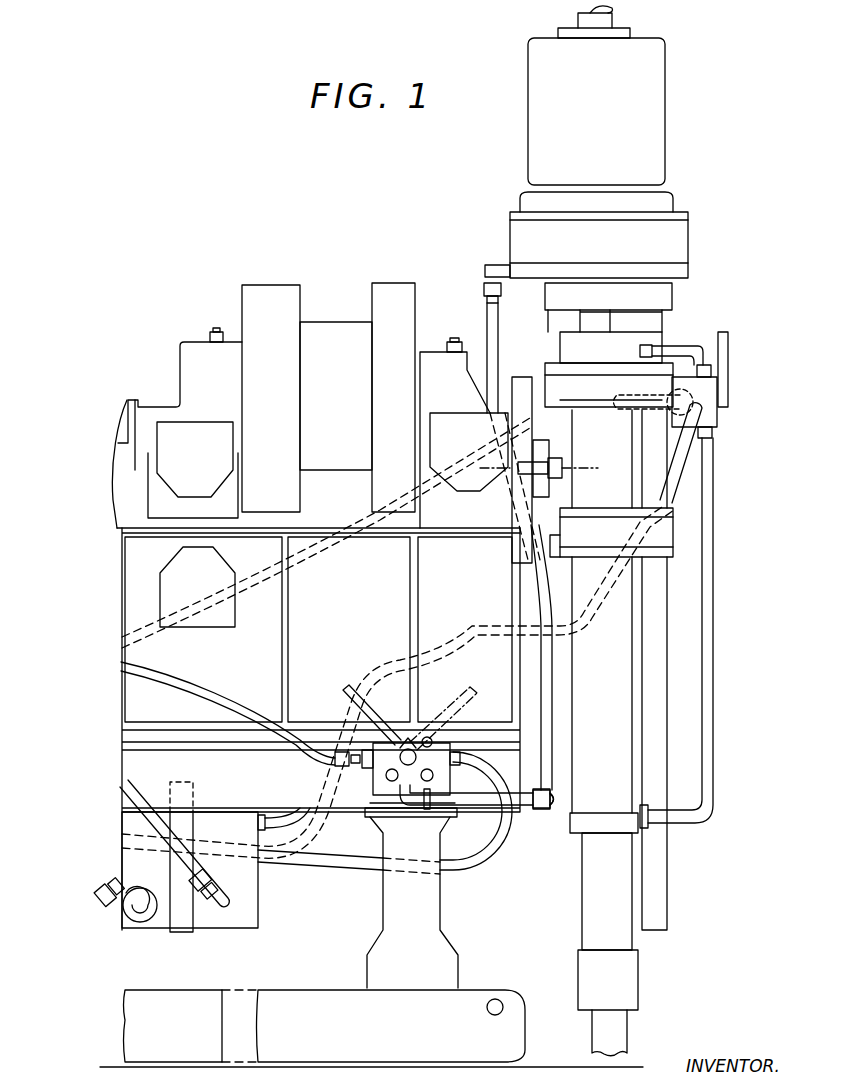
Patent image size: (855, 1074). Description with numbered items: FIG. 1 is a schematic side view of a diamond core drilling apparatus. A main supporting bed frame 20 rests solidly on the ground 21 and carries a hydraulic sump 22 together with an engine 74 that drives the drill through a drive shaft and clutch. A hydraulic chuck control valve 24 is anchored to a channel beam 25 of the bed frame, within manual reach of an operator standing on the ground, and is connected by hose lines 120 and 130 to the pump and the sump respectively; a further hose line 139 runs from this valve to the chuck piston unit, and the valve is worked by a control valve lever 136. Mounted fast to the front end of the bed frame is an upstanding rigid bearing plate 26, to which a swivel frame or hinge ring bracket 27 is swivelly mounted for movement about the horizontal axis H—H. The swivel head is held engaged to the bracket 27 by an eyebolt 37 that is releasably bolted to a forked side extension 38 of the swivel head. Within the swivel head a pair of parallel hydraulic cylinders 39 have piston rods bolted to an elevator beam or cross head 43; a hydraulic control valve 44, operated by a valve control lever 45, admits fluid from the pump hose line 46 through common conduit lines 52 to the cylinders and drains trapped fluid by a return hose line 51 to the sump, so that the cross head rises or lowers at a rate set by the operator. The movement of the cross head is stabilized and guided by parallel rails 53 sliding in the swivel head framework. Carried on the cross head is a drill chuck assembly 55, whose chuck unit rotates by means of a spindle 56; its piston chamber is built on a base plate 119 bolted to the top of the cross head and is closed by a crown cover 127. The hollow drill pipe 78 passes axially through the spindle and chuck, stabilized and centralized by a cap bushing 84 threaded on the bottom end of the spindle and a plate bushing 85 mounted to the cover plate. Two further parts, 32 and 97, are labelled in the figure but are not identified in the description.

The main supporting bed frame 20 is at (356, 602).
The ground 21 is at (96, 1042).
The hydraulic sump 22 is at (266, 888).
The hydraulic chuck control valve 24 is at (372, 790).
The channel beam 25 is at (314, 813).
The bearing plate 26 is at (510, 376).
The swivel frame or hinge ring bracket 27 is at (524, 566).
The collar flange 32 is at (674, 535).
The eyebolt 37 is at (552, 488).
The forked side extension 38 is at (547, 442).
The hydraulic cylinders 39 is at (576, 800).
The elevator beam or cross head 43 is at (677, 294).
The hydraulic control valve 44 is at (717, 420).
The valve control lever 45 is at (726, 334).
The pump hose line 46 is at (262, 585).
The return hose line 51 is at (686, 460).
The common conduit lines 52 is at (687, 347).
The parallel rails 53 is at (668, 879).
The drill chuck assembly 55 is at (672, 134).
The spindle 56 is at (580, 890).
The engine 74 is at (131, 393).
The drill pipe 78 is at (630, 1030).
The cap bushing 84 is at (636, 984).
The plate bushing 85 is at (622, 26).
The motor housing 97 is at (653, 88).
The base plate 119 is at (686, 268).
The hose line 120 is at (200, 712).
The crown cover 127 is at (680, 210).
The hose line 130 is at (327, 860).
The control valve lever 136 is at (345, 688).
The hose line 139 is at (487, 322).